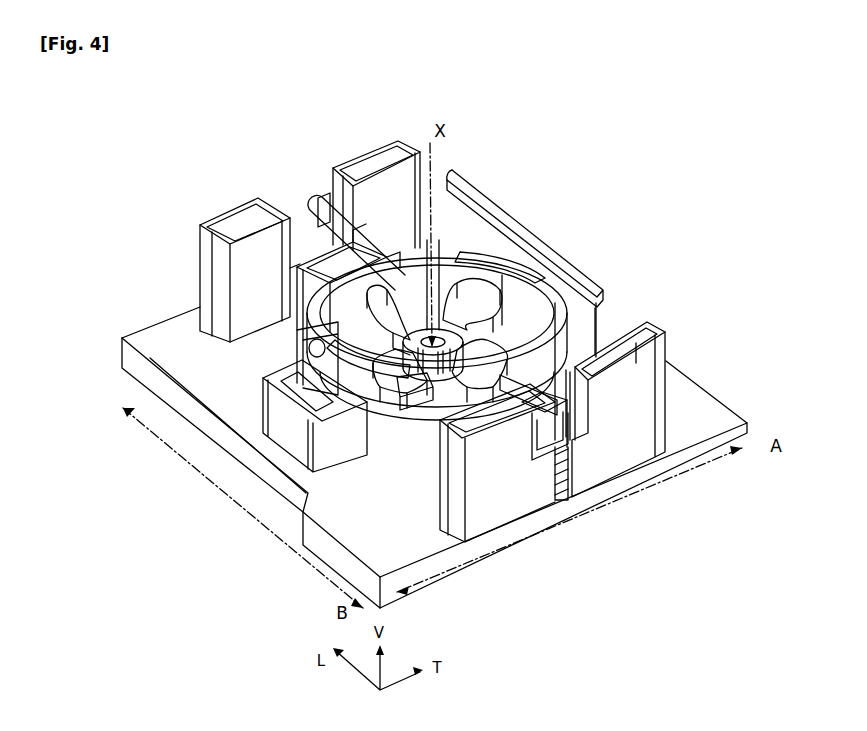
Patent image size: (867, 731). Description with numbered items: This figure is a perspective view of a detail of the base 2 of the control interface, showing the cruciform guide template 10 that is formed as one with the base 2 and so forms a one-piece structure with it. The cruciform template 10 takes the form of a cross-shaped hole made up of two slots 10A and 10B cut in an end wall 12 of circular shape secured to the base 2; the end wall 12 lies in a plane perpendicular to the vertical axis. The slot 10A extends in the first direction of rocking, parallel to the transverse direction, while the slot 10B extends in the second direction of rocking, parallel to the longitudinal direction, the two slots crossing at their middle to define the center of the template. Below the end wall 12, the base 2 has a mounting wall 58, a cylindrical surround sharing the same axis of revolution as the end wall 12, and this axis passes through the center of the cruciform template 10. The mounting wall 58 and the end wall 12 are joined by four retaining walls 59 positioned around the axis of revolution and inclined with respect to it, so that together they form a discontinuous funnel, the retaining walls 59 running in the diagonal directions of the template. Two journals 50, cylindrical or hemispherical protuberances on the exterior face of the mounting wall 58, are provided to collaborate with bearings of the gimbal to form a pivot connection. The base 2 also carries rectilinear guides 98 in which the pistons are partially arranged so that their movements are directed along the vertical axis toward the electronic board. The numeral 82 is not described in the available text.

The base 2 is at (683, 247).
The cruciform guide template 10 is at (503, 177).
The slot 10A is at (482, 260).
The slot 10B is at (538, 258).
The end wall 12 is at (333, 242).
The journal 50 is at (295, 340).
The mounting wall 58 is at (455, 400).
The retaining wall 59 is at (437, 290).
The rotation axis 82 is at (437, 277).
The rectilinear guide 98 is at (303, 350).